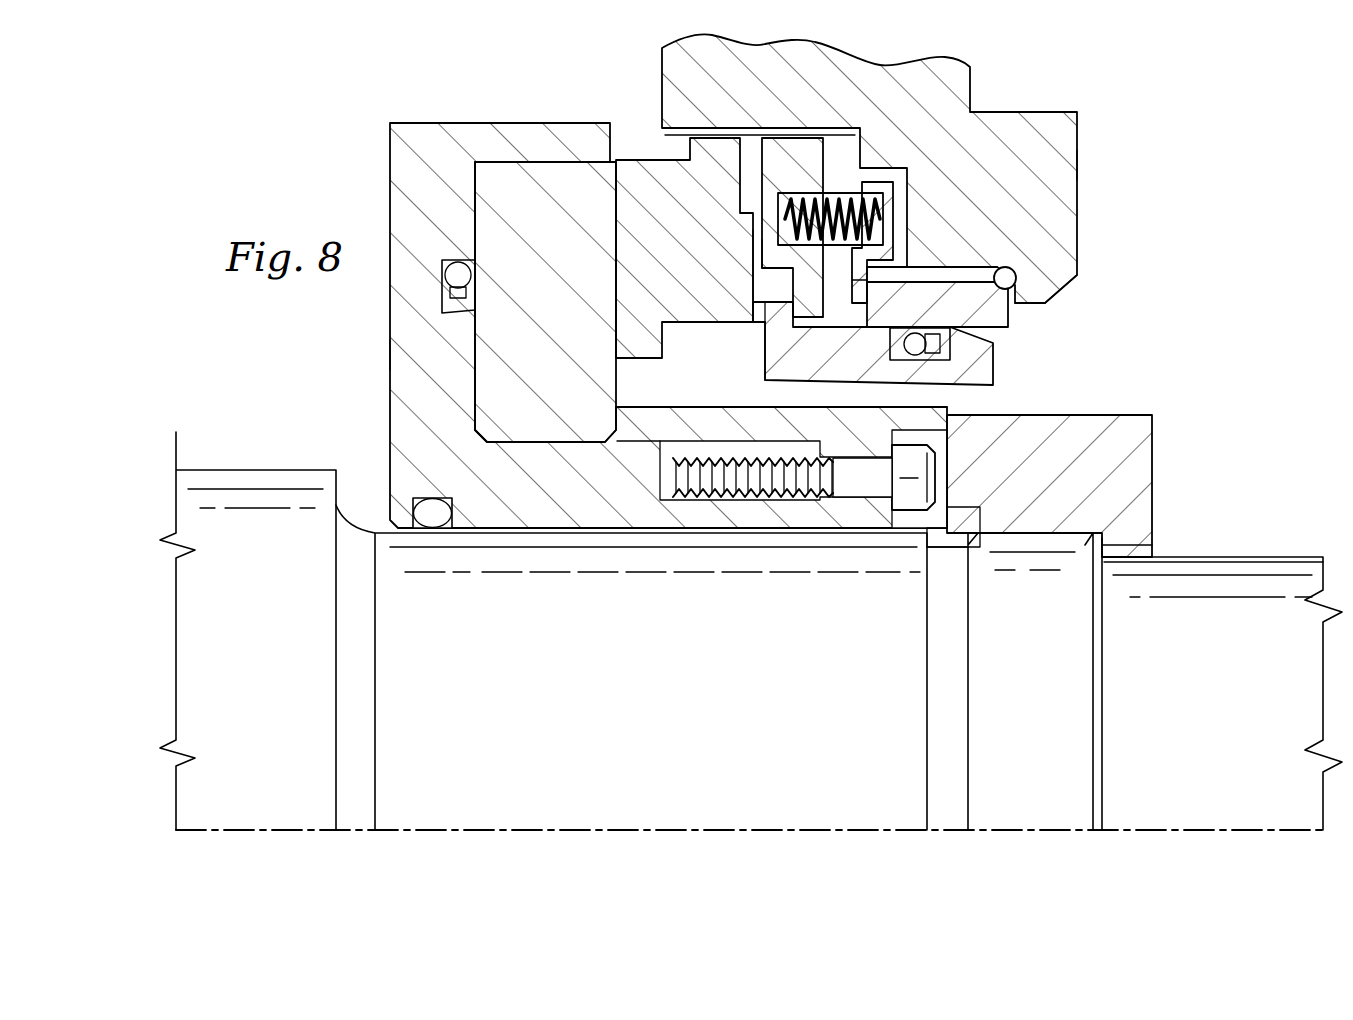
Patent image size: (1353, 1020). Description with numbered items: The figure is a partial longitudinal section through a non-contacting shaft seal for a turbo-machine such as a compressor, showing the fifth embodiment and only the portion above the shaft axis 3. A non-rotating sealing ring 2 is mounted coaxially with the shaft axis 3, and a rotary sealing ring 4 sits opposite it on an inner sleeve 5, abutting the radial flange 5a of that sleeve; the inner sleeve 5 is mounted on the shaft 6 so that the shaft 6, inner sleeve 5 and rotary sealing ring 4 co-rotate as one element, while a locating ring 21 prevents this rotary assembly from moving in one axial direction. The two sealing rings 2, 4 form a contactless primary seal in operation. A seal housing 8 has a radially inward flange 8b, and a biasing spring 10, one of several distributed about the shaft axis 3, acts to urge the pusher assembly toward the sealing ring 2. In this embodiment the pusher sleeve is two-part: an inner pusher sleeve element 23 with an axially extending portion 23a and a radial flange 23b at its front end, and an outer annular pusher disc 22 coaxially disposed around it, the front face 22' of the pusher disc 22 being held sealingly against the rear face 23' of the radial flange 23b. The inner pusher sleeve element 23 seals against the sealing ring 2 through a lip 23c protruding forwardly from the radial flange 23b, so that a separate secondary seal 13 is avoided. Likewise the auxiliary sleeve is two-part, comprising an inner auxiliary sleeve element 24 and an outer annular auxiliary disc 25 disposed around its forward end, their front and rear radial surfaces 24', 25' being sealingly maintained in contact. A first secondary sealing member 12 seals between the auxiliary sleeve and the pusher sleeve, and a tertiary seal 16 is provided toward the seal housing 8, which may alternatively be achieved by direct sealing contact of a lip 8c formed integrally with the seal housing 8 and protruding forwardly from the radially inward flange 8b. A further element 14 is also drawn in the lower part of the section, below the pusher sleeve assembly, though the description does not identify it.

The sealing ring 2 is at (648, 158).
The shaft axis 3 is at (638, 828).
The rotary sealing ring 4 is at (558, 188).
The inner sleeve 5 is at (390, 196).
The radial flange 5a is at (400, 358).
The shaft 6 is at (258, 470).
The seal housing 8 is at (660, 80).
The radially inward flange 8b is at (1045, 170).
The lip 8c is at (1062, 288).
The biasing spring 10 is at (832, 200).
The first secondary sealing member 12 is at (915, 340).
The secondary seal 13 is at (750, 285).
The bolt 14 is at (978, 372).
The tertiary seal 16 is at (1022, 305).
The locating ring 21 is at (1152, 492).
The outer annular pusher disc 22 is at (792, 189).
The front face 22' is at (726, 246).
The inner pusher sleeve element 23 is at (901, 343).
The axially extending portion 23a is at (840, 372).
The radial flange 23b is at (775, 330).
The lip 23c is at (742, 305).
The rear face 23' is at (807, 342).
The inner auxiliary sleeve element 24 is at (945, 256).
The front radial surface 24' is at (914, 256).
The outer annular auxiliary disc 25 is at (902, 242).
The rear radial surface 25' is at (870, 323).